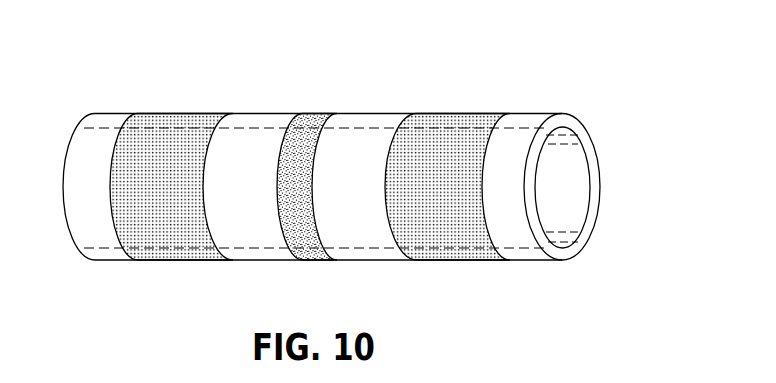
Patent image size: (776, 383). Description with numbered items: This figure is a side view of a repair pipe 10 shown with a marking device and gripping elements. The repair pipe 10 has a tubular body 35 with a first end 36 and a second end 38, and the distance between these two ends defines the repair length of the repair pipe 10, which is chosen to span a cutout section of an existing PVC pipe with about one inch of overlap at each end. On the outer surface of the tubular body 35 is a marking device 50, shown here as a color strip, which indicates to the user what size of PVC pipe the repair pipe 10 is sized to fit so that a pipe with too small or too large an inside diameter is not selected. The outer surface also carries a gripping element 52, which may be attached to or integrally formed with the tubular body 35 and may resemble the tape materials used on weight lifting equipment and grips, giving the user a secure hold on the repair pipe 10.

The repair pipe 10 is at (388, 187).
The tubular body 35 is at (98, 137).
The first end 36 is at (97, 268).
The second end 38 is at (562, 268).
The marking device 50 is at (313, 163).
The gripping element 52 is at (175, 137).